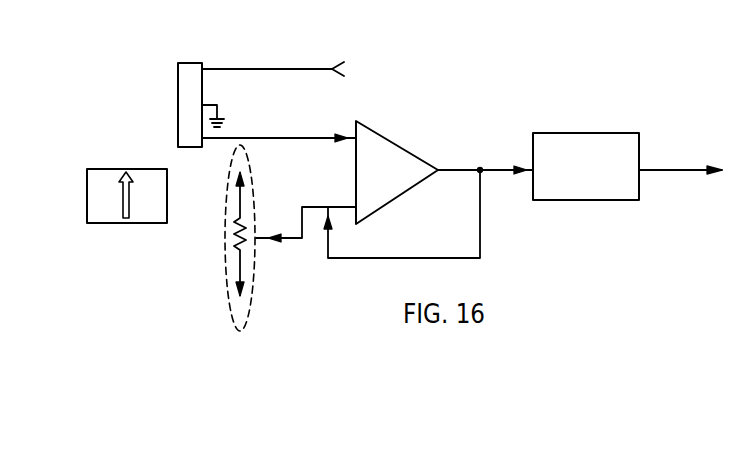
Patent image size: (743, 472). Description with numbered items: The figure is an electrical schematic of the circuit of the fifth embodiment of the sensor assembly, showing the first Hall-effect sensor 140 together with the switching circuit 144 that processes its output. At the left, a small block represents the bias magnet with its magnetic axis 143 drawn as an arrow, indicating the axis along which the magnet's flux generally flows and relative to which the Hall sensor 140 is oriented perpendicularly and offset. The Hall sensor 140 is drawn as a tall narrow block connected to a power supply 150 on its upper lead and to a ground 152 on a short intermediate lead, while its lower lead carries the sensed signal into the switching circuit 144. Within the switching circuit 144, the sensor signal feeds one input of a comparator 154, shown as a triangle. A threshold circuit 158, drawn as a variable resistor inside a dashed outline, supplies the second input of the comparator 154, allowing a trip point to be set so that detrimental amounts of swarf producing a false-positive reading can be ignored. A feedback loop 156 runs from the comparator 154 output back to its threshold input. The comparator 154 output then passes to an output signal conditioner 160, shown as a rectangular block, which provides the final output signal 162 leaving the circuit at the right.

The first Hall-effect sensor 140 is at (190, 63).
The power supply 150 is at (292, 66).
The ground 152 is at (215, 104).
The comparator 154 is at (383, 133).
The feedback loop 156 is at (390, 258).
The threshold circuit 158 is at (254, 296).
The output signal conditioner 160 is at (612, 133).
The output signal 162 is at (663, 164).
The switching circuit 144 is at (105, 168).
The magnetic axis 143 is at (122, 208).